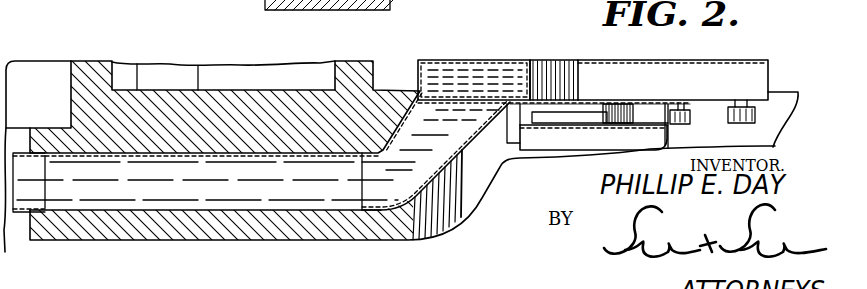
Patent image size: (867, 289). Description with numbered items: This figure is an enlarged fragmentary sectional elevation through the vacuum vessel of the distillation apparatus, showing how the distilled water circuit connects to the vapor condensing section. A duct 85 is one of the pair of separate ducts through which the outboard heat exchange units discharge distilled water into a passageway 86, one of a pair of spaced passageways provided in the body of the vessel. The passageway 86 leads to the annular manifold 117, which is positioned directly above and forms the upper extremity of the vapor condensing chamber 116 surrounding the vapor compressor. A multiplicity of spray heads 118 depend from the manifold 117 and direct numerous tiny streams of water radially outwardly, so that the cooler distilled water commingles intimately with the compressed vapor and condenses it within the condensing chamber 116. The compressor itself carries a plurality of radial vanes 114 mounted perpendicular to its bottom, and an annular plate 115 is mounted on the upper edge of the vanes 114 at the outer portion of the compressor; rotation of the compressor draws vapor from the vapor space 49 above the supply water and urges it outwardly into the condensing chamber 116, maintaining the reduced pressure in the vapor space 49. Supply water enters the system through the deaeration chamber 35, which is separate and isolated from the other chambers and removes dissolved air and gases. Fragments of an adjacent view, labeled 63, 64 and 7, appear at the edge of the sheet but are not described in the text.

The sectional view indicator 7 is at (410, 0).
The deaeration chamber 35 is at (208, 76).
The vapor space 49 is at (42, 75).
The plate 63 is at (290, 10).
The plate 64 is at (331, 10).
The duct 85 is at (22, 213).
The passageway 86 is at (255, 203).
The vane 114 is at (553, 137).
The annular plate 115 is at (643, 128).
The vapor condensing chamber 116 is at (467, 178).
The annular manifold 117 is at (485, 60).
The spray head 118 is at (690, 117).